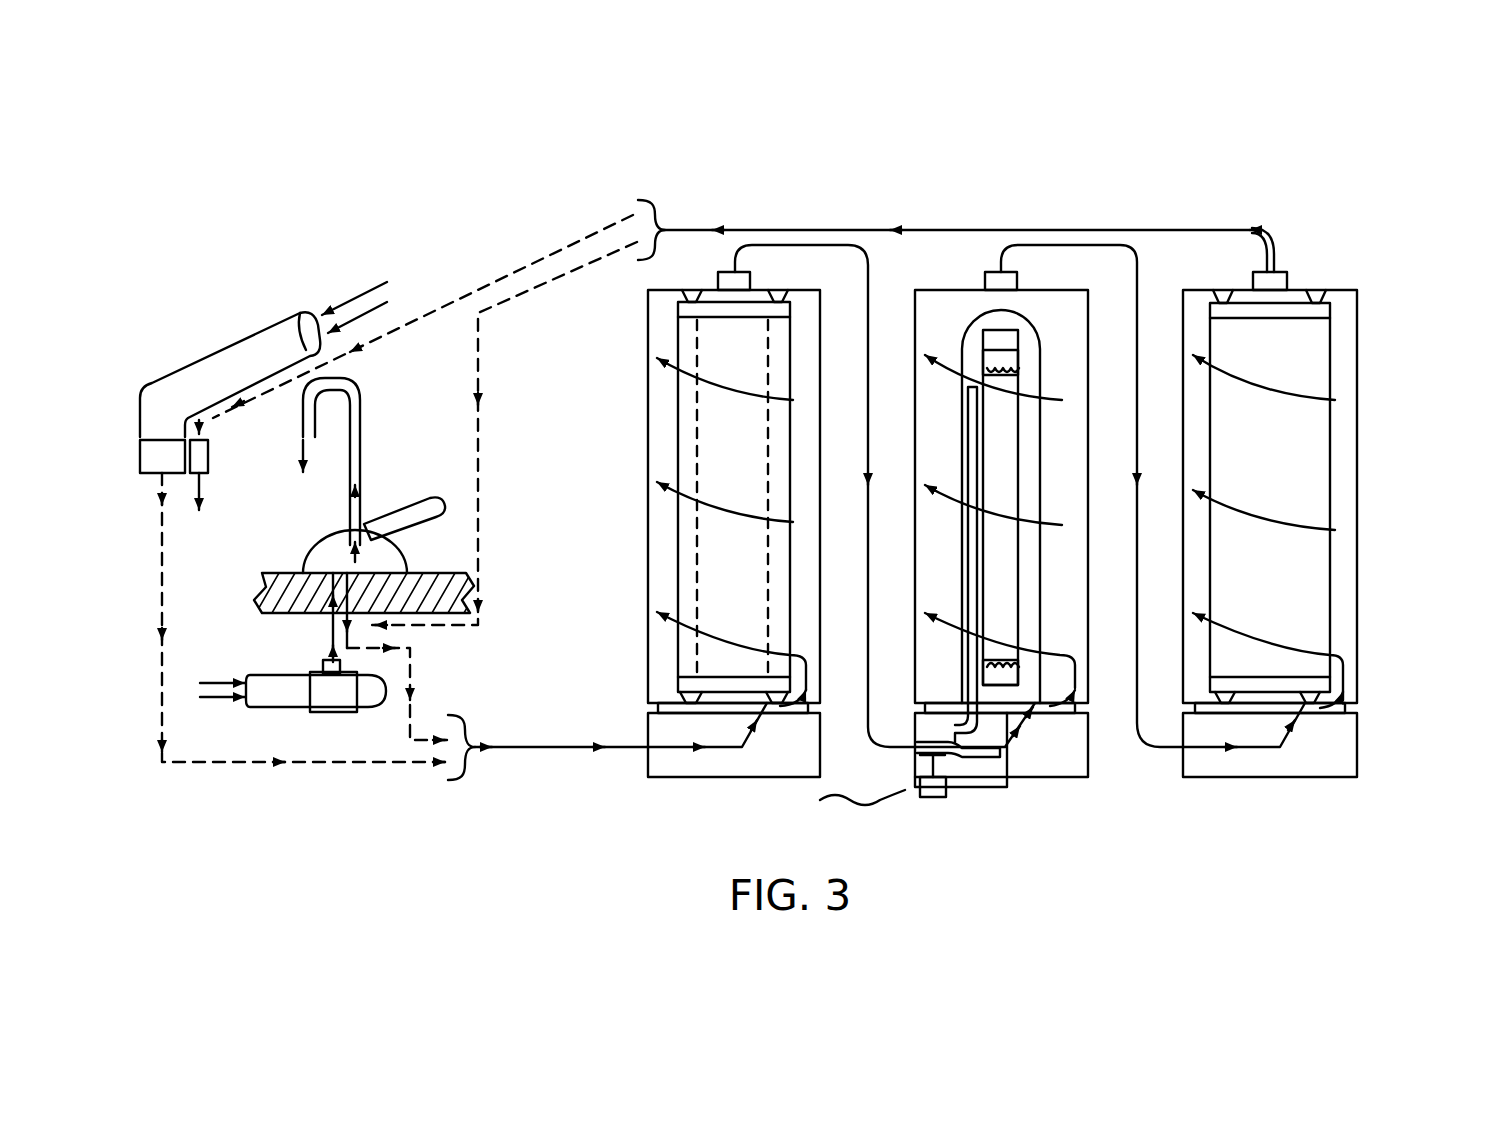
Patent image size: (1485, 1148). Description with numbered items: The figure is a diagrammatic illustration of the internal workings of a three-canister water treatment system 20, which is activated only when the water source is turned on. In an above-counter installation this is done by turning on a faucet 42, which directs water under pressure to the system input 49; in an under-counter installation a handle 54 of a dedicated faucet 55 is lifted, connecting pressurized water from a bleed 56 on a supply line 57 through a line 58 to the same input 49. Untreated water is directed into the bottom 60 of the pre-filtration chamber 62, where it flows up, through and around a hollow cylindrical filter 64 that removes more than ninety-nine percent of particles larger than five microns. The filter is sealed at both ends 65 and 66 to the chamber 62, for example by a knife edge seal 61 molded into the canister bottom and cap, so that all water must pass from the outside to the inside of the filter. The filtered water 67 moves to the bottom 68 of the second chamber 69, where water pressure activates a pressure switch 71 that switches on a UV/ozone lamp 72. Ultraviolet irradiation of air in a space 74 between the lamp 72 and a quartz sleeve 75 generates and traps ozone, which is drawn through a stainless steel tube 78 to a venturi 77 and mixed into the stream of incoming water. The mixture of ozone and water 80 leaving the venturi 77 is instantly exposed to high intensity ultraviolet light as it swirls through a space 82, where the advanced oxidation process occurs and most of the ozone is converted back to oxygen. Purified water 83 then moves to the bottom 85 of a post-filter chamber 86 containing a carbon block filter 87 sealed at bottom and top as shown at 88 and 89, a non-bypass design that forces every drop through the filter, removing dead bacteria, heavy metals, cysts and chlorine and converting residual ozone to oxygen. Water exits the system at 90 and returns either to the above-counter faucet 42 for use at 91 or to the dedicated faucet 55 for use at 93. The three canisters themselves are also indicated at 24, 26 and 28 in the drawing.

The system 20 is at (1137, 181).
The first tank 24 is at (646, 398).
The second tank 26 is at (912, 398).
The third tank 28 is at (1180, 440).
The faucet 42 is at (215, 362).
The input 49 is at (568, 748).
The handle 54 is at (410, 525).
The dedicated faucet 55 is at (318, 522).
The bleed 56 is at (328, 668).
The supply line 57 is at (262, 692).
The line 58 is at (425, 700).
The bottom of pre-filtration chamber 60 is at (710, 758).
The knife edge seal 61 is at (692, 292).
The pre-filtration chamber 62 is at (660, 540).
The filter 64 is at (680, 465).
The filter end 65 is at (675, 680).
The filter end 66 is at (792, 314).
The filtered water 67 is at (872, 266).
The bottom of second chamber 68 is at (1072, 768).
The second chamber 69 is at (913, 650).
The pressure switch 71 is at (933, 800).
The UV/O3 lamp 72 is at (1010, 466).
The space 74 is at (1036, 512).
The quartz sleeve 75 is at (1042, 598).
The venturi 77 is at (960, 757).
The stainless steel tube 78 is at (966, 432).
The mixture of ozone and water 80 is at (1078, 678).
The space 82 is at (1067, 425).
The purified water 83 is at (1142, 288).
The bottom of post-filter chamber 85 is at (1230, 763).
The post-filter chamber 86 is at (1362, 532).
The carbon block filter 87 is at (1336, 468).
The bottom seal 88 is at (1322, 700).
The top seal 89 is at (1320, 290).
The system exit 90 is at (1262, 232).
The point of use 91 is at (207, 493).
The point of use 93 is at (302, 450).